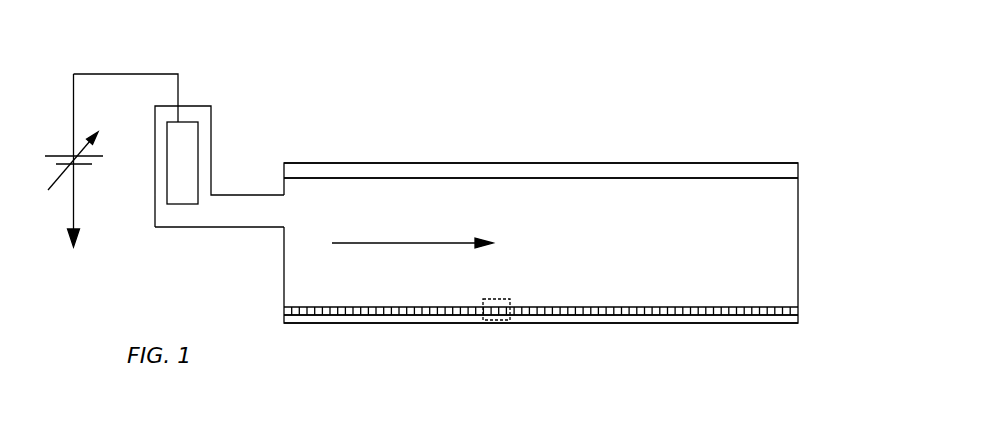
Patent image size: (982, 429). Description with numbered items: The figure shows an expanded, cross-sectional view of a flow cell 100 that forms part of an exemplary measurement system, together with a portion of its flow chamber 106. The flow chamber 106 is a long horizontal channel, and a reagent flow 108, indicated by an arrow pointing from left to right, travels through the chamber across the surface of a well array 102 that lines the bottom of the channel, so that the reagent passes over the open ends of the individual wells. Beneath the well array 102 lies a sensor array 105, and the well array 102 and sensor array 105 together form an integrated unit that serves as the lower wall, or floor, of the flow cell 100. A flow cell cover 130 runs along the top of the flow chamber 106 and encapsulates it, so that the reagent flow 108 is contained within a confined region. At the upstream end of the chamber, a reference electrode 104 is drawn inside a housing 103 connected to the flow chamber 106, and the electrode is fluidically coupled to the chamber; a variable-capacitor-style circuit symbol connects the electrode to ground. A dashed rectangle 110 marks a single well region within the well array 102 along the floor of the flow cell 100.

The flow cell 100 is at (556, 43).
The well array 102 is at (734, 313).
The control circuit housing 103 is at (235, 213).
The reference electrode 104 is at (198, 146).
The sensor array 105 is at (685, 323).
The flow chamber 106 is at (627, 198).
The reagent flow 108 is at (380, 243).
The heating element 110 is at (497, 320).
The flow cell cover 130 is at (763, 172).